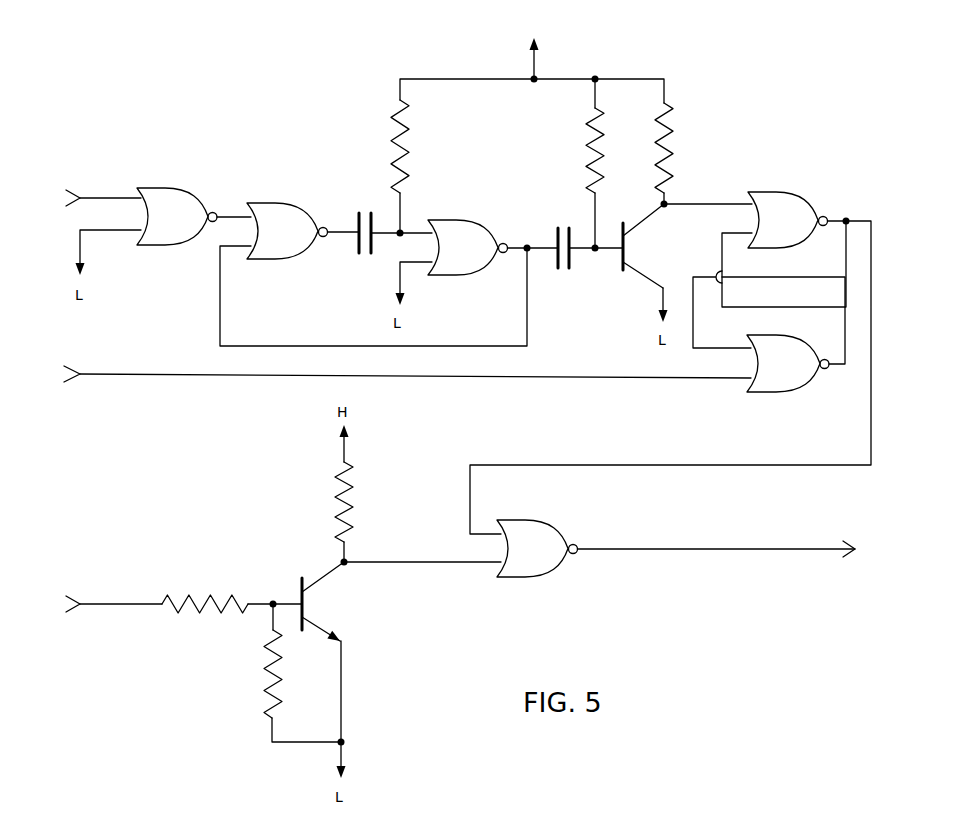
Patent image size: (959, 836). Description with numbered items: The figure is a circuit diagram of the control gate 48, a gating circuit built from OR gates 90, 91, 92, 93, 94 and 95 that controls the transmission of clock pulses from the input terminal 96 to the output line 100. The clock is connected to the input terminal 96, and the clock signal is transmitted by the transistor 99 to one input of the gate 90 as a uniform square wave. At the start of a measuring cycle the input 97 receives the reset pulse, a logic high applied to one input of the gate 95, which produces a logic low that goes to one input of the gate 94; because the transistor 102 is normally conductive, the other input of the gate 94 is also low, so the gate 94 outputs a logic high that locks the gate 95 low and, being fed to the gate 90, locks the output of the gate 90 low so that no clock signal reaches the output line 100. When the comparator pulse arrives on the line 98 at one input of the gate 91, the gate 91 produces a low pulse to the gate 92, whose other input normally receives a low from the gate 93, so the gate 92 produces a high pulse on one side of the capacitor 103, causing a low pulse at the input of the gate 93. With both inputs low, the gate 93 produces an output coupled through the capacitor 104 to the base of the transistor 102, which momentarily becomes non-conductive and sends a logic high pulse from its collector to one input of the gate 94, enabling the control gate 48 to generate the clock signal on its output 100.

The control gate 48 is at (724, 161).
The Tc input line 98 is at (102, 196).
The OR gate 91 is at (177, 207).
The OR gate 92 is at (288, 217).
The capacitor 103 is at (365, 195).
The OR gate 93 is at (472, 238).
The capacitor 104 is at (559, 212).
The transistor 102 is at (644, 244).
The OR gate 94 is at (795, 210).
The OR gate 95 is at (787, 377).
The input 97 is at (132, 376).
The OR gate 90 is at (532, 562).
The output line 100 is at (708, 549).
The input terminal 96 is at (107, 606).
The transistor 99 is at (336, 601).